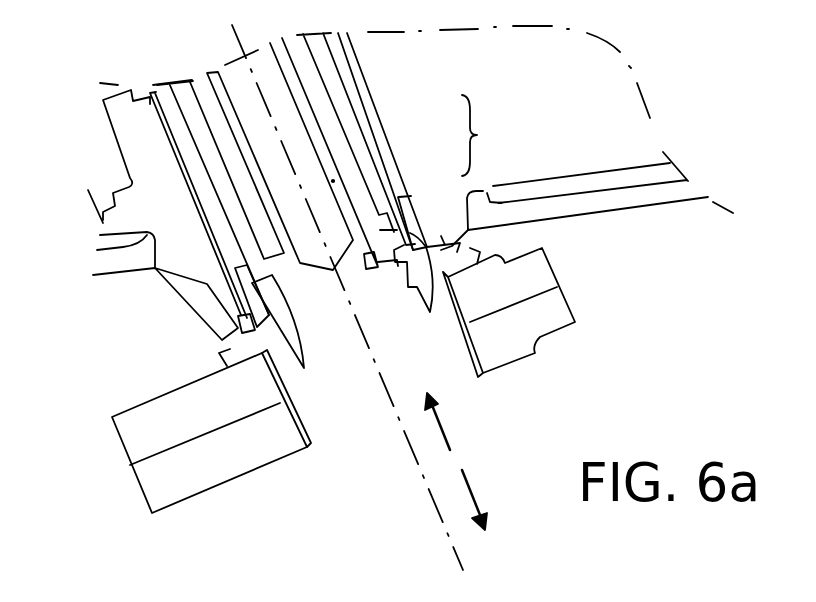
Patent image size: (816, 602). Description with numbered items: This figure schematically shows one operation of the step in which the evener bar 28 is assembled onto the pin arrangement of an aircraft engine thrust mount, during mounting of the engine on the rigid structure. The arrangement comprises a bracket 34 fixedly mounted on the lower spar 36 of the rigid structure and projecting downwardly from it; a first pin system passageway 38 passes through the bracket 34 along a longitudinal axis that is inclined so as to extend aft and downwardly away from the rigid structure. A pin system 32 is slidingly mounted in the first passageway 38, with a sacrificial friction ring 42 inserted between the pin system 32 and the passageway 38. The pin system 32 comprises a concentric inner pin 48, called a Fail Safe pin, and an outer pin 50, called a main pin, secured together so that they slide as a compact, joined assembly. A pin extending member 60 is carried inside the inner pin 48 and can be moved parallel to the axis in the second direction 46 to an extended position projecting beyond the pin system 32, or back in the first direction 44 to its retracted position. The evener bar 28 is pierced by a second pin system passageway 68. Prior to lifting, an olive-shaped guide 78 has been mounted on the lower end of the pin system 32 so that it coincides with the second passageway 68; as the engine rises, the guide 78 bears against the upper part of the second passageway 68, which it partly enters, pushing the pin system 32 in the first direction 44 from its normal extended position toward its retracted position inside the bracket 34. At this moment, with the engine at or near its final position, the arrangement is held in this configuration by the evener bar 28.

The evener bar 28 is at (167, 493).
The pin system 32 is at (484, 135).
The bracket 34 is at (187, 317).
The lower spar 36 is at (100, 240).
The first pin system passageway 38 is at (204, 214).
The sacrificial friction ring 42 is at (236, 285).
The first direction 44 is at (443, 425).
The second direction 46 is at (472, 493).
The inner pin 48 is at (383, 196).
The outer pin 50 is at (378, 135).
The pin extending member 60 is at (308, 108).
The second pin system passageway 68 is at (285, 392).
The olive-shaped guide 78 is at (433, 280).